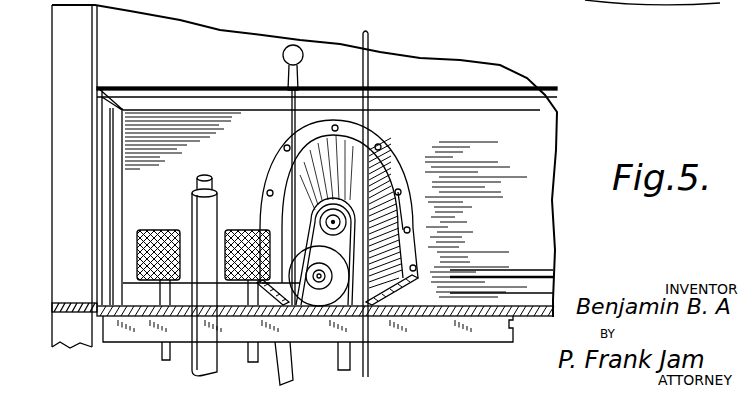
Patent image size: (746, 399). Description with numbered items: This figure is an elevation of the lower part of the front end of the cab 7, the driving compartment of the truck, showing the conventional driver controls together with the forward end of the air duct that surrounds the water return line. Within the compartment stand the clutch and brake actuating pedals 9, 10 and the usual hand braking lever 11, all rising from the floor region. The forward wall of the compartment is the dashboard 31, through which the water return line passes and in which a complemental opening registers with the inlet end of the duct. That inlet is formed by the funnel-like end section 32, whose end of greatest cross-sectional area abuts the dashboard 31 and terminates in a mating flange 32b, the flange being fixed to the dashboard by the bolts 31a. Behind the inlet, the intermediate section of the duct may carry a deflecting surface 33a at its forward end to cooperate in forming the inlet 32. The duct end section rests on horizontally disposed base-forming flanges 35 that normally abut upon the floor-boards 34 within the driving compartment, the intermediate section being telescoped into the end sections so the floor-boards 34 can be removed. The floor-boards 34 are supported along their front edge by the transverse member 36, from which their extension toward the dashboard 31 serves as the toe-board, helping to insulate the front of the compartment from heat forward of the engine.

The cab 7 is at (648, 3).
The clutch actuating pedal 9 is at (148, 232).
The brake actuating pedal 10 is at (241, 228).
The hand braking lever 11 is at (369, 67).
The dashboard 31 is at (218, 40).
The bolts 31a is at (400, 196).
The inlet end-forming section of duct 32 is at (333, 158).
The mating flange 32b is at (395, 165).
The deflecting surface 33a is at (277, 310).
The floor-boards 34 is at (527, 289).
The base-forming flanges 35 is at (410, 300).
The transverse member 36 is at (486, 340).